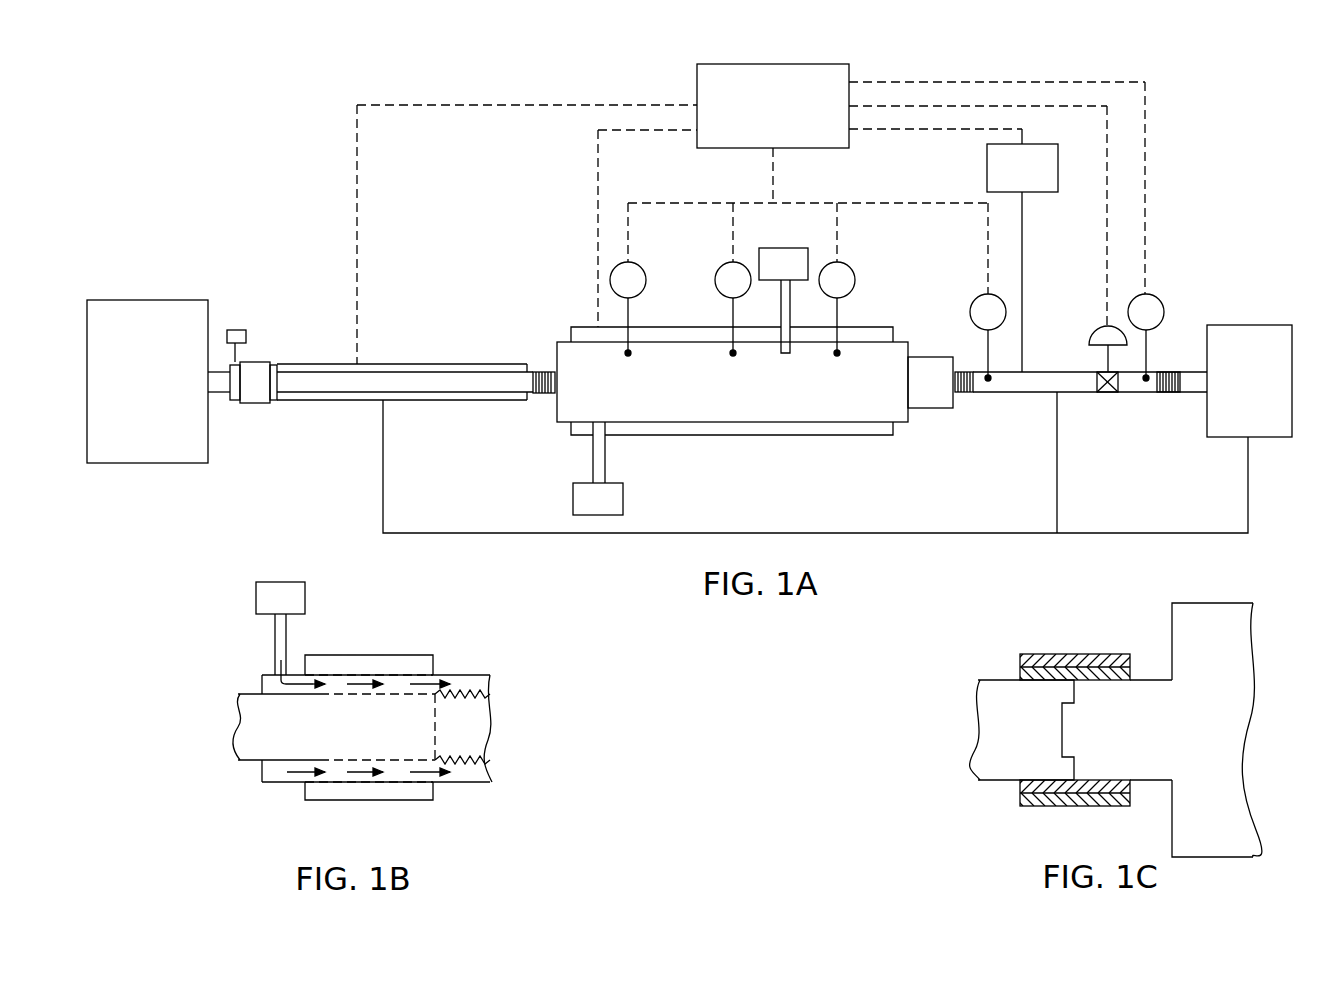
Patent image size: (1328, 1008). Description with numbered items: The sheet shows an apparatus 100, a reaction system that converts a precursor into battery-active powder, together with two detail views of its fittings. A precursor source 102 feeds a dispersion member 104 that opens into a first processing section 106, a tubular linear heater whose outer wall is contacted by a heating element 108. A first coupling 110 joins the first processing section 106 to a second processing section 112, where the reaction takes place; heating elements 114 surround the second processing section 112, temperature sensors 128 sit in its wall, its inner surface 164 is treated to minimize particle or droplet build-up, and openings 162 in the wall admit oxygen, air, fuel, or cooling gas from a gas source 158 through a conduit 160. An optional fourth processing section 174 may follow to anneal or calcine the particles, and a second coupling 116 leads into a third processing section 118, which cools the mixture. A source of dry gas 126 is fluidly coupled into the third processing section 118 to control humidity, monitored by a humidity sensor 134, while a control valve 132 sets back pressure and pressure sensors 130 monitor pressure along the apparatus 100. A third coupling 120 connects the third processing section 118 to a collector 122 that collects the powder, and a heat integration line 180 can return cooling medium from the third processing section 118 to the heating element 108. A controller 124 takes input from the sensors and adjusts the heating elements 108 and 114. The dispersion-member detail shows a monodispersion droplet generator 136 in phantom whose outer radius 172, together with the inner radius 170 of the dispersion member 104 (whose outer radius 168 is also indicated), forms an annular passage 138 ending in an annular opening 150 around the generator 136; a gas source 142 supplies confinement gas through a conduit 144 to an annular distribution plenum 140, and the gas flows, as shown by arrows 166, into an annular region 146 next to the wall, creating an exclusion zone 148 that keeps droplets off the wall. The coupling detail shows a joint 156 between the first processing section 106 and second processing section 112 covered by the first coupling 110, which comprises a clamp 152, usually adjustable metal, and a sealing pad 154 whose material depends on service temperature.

In FIG. 1A, the apparatus 100 is at (1150, 66).
In FIG. 1A, the precursor source 102 is at (160, 300).
In FIG. 1A, the dispersion member 104 is at (255, 405).
In FIG. 1B, the dispersion member 104 is at (222, 733).
In FIG. 1A, the first processing section 106 is at (453, 382).
In FIG. 1B, the first processing section 106 is at (450, 675).
In FIG. 1C, the first processing section 106 is at (991, 737).
In FIG. 1A, the heating element 108 is at (430, 363).
In FIG. 1A, the first coupling 110 is at (543, 395).
In FIG. 1C, the first coupling 110 is at (1077, 640).
In FIG. 1A, the second processing section 112 is at (766, 405).
In FIG. 1C, the second processing section 112 is at (1193, 737).
In FIG. 1A, the heating elements 114 is at (682, 327).
In FIG. 1A, the second coupling 116 is at (965, 395).
In FIG. 1A, the third processing section 118 is at (1058, 370).
In FIG. 1A, the third coupling 120 is at (1168, 395).
In FIG. 1A, the collector 122 is at (1255, 325).
In FIG. 1A, the controller 124 is at (756, 118).
In FIG. 1A, the source of dry gas 126 is at (1005, 180).
In FIG. 1A, the temperature sensors 128 is at (628, 356).
In FIG. 1A, the pressure sensors 130 is at (988, 381).
In FIG. 1A, the control valve 132 is at (1108, 395).
In FIG. 1A, the humidity sensor 134 is at (1158, 297).
In FIG. 1B, the monodispersion droplet generator 136 is at (435, 730).
In FIG. 1B, the annular passage 138 is at (400, 775).
In FIG. 1B, the annular distribution plenum 140 is at (278, 783).
In FIG. 1A, the gas source 142 is at (243, 328).
In FIG. 1B, the gas source 142 is at (286, 582).
In FIG. 1A, the conduit 144 is at (243, 352).
In FIG. 1B, the conduit 144 is at (275, 640).
In FIG. 1B, the annular region 146 is at (480, 685).
In FIG. 1B, the exclusion zone 148 is at (487, 707).
In FIG. 1B, the annular opening 150 is at (445, 775).
In FIG. 1C, the clamp 152 is at (1020, 660).
In FIG. 1C, the sealing pad 154 is at (1020, 785).
In FIG. 1C, the joint 156 is at (1063, 723).
In FIG. 1A, the gas source 158 is at (772, 248).
In FIG. 1A, the conduit 160 is at (793, 293).
In FIG. 1A, the openings 162 is at (783, 344).
In FIG. 1A, the inner surface 164 is at (655, 342).
In FIG. 1B, the arrows 166 is at (357, 775).
In FIG. 1B, the outer radius 168 is at (353, 655).
In FIG. 1B, the inner radius 170 is at (420, 782).
In FIG. 1B, the outer radius 172 is at (328, 695).
In FIG. 1A, the fourth processing section 174 is at (933, 357).
In FIG. 1A, the heat integration line 180 is at (880, 532).